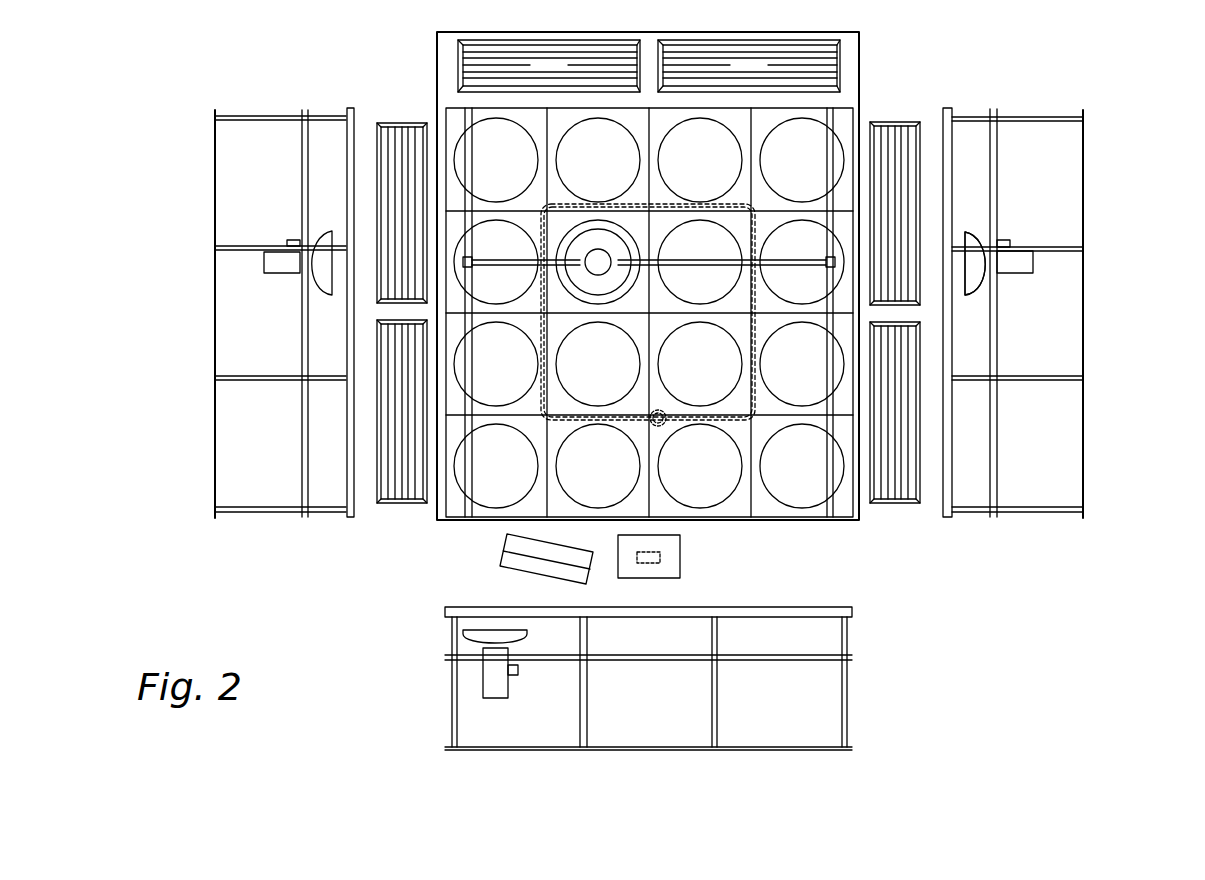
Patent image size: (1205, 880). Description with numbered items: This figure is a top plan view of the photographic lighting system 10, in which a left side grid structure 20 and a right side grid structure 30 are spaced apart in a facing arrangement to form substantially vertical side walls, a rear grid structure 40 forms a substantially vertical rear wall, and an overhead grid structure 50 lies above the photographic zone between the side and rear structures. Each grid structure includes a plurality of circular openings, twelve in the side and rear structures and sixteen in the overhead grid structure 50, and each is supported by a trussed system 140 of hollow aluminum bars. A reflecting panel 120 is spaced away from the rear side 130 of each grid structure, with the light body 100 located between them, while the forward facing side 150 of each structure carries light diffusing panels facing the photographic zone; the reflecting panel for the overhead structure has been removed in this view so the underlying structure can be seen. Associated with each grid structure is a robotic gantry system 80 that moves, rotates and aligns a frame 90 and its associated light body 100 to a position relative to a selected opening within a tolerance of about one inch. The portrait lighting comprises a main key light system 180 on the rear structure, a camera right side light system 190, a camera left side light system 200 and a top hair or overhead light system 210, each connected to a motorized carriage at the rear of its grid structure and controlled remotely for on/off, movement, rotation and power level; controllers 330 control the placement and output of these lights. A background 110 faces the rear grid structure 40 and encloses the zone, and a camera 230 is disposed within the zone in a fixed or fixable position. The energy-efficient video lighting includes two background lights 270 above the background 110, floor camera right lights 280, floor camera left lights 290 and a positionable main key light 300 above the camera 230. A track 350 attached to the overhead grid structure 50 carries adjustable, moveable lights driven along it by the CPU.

The system 10 is at (962, 617).
The left side grid structure 20 is at (357, 123).
The right side grid structure 30 is at (942, 128).
The rear grid structure 40 is at (680, 606).
The overhead grid structure 50 is at (765, 515).
The robotic gantry system 80 is at (688, 266).
The frame 90 is at (975, 230).
The light body 100 is at (285, 263).
The background 110 is at (858, 55).
The reflecting panel 120 is at (213, 273).
The rear side 130 is at (345, 467).
The trussed system 140 is at (268, 117).
The forward facing side 150 is at (358, 509).
The main key light system 180 is at (480, 637).
The camera right side light system 190 is at (975, 275).
The camera left side light system 200 is at (325, 233).
The overhead light system 210 is at (600, 266).
The camera 230 is at (680, 553).
The background lights 270 is at (534, 74).
The floor camera right lights 280 is at (905, 122).
The floor camera left lights 290 is at (402, 123).
The main key light 300 is at (538, 568).
The controllers 330 is at (290, 240).
The track 350 is at (658, 207).